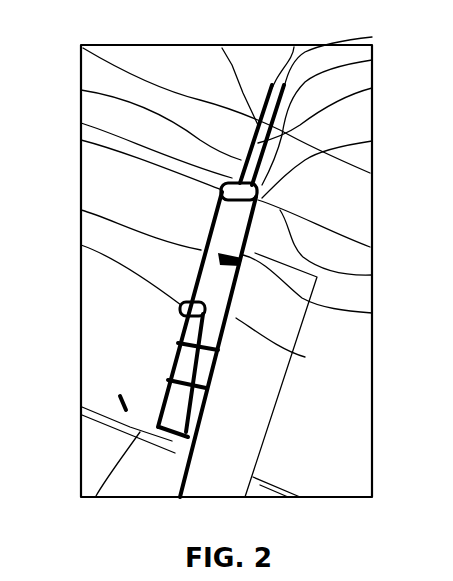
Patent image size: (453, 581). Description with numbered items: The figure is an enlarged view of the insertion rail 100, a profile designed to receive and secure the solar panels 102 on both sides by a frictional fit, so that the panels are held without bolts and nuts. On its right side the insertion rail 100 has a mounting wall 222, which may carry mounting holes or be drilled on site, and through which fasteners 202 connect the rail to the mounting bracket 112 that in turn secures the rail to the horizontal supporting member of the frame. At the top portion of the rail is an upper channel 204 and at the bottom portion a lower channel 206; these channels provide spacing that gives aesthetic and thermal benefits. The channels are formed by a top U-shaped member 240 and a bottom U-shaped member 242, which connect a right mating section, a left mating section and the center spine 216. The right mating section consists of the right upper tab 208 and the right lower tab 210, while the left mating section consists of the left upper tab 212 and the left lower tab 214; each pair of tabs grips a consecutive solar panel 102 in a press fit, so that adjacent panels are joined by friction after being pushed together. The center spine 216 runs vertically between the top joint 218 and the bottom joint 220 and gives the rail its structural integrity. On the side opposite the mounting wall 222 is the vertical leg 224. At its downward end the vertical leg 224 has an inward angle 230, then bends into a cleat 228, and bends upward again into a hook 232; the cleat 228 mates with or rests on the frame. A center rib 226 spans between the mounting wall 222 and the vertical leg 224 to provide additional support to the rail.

The insertion rail 100 is at (180, 211).
The solar panels 102 is at (154, 92).
The mounting bracket 112 is at (263, 378).
The fasteners 202 is at (175, 328).
The upper channel 204 is at (294, 47).
The lower channel 206 is at (264, 192).
The right upper tab 208 is at (372, 60).
The right lower tab 210 is at (372, 275).
The left upper tab 212 is at (222, 48).
The left lower tab 214 is at (81, 138).
The center spine 216 is at (81, 90).
The top joint 218 is at (372, 88).
The bottom joint 220 is at (372, 313).
The mounting wall 222 is at (305, 357).
The vertical leg 224 is at (81, 210).
The center rib 226 is at (81, 245).
The cleat 228 is at (95, 497).
The inward angle 230 is at (172, 357).
The hook 232 is at (118, 403).
The top U-shaped member 240 is at (372, 37).
The bottom U-shaped member 242 is at (372, 141).